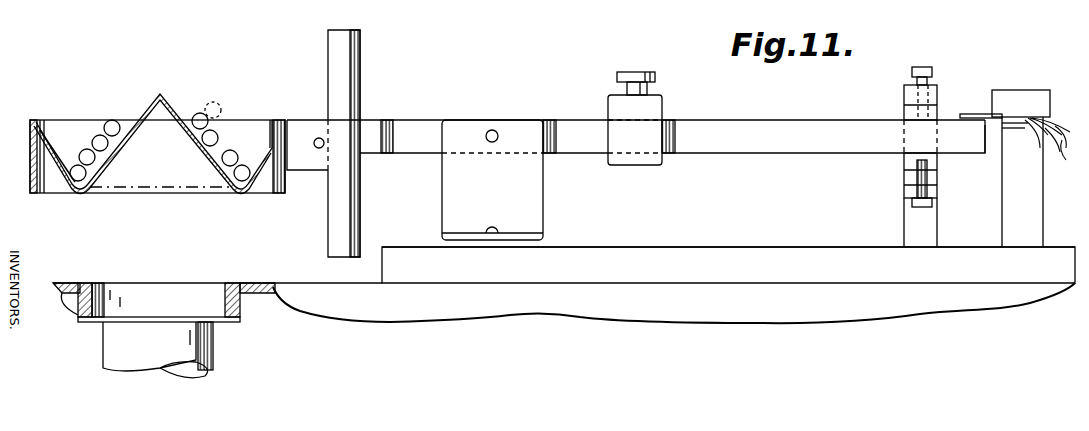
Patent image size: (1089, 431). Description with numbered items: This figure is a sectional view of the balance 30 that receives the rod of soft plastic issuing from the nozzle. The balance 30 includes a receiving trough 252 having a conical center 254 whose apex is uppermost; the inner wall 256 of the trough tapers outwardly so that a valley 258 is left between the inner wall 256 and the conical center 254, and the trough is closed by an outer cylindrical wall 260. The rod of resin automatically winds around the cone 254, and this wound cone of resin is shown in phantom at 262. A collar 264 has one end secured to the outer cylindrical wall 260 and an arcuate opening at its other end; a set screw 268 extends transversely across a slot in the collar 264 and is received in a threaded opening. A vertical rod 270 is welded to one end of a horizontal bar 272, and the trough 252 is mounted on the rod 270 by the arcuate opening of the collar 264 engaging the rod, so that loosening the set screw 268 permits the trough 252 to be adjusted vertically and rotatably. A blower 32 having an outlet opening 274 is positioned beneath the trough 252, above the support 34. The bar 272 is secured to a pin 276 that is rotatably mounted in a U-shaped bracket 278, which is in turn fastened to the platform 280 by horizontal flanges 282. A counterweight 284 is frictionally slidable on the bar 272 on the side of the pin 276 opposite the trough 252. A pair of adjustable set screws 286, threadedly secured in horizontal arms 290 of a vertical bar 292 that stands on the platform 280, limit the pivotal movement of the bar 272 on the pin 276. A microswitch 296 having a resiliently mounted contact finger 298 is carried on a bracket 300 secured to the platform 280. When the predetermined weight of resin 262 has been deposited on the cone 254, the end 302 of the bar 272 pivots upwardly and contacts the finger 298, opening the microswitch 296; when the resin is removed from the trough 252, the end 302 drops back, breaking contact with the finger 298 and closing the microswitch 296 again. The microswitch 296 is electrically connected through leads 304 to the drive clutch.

The balance 30 is at (496, 74).
The blower 32 is at (222, 349).
The support base 34 is at (408, 328).
The receiving trough 252 is at (172, 210).
The conical center 254 is at (160, 96).
The inner wall 256 is at (50, 128).
The valley 258 is at (240, 188).
The outer cylindrical wall 260 is at (32, 185).
The cone of resin 262 is at (214, 118).
The collar 264 is at (293, 118).
The set screw 268 is at (316, 147).
The vertical rod 270 is at (357, 98).
The horizontal bar 272 is at (762, 118).
The outlet opening 274 is at (165, 296).
The pin 276 is at (493, 128).
The U-shaped bracket 278 is at (543, 199).
The platform 280 is at (660, 247).
The horizontal flanges 282 is at (548, 240).
The counterweight 284 is at (655, 107).
The adjustable set screws 286 is at (910, 72).
The horizontal arms 290 is at (904, 95).
The vertical bar 292 is at (912, 227).
The microswitch 296 is at (1012, 90).
The contact finger 298 is at (965, 112).
The bracket 300 is at (1010, 210).
The end of bar 302 is at (977, 150).
The leads 304 is at (1055, 150).